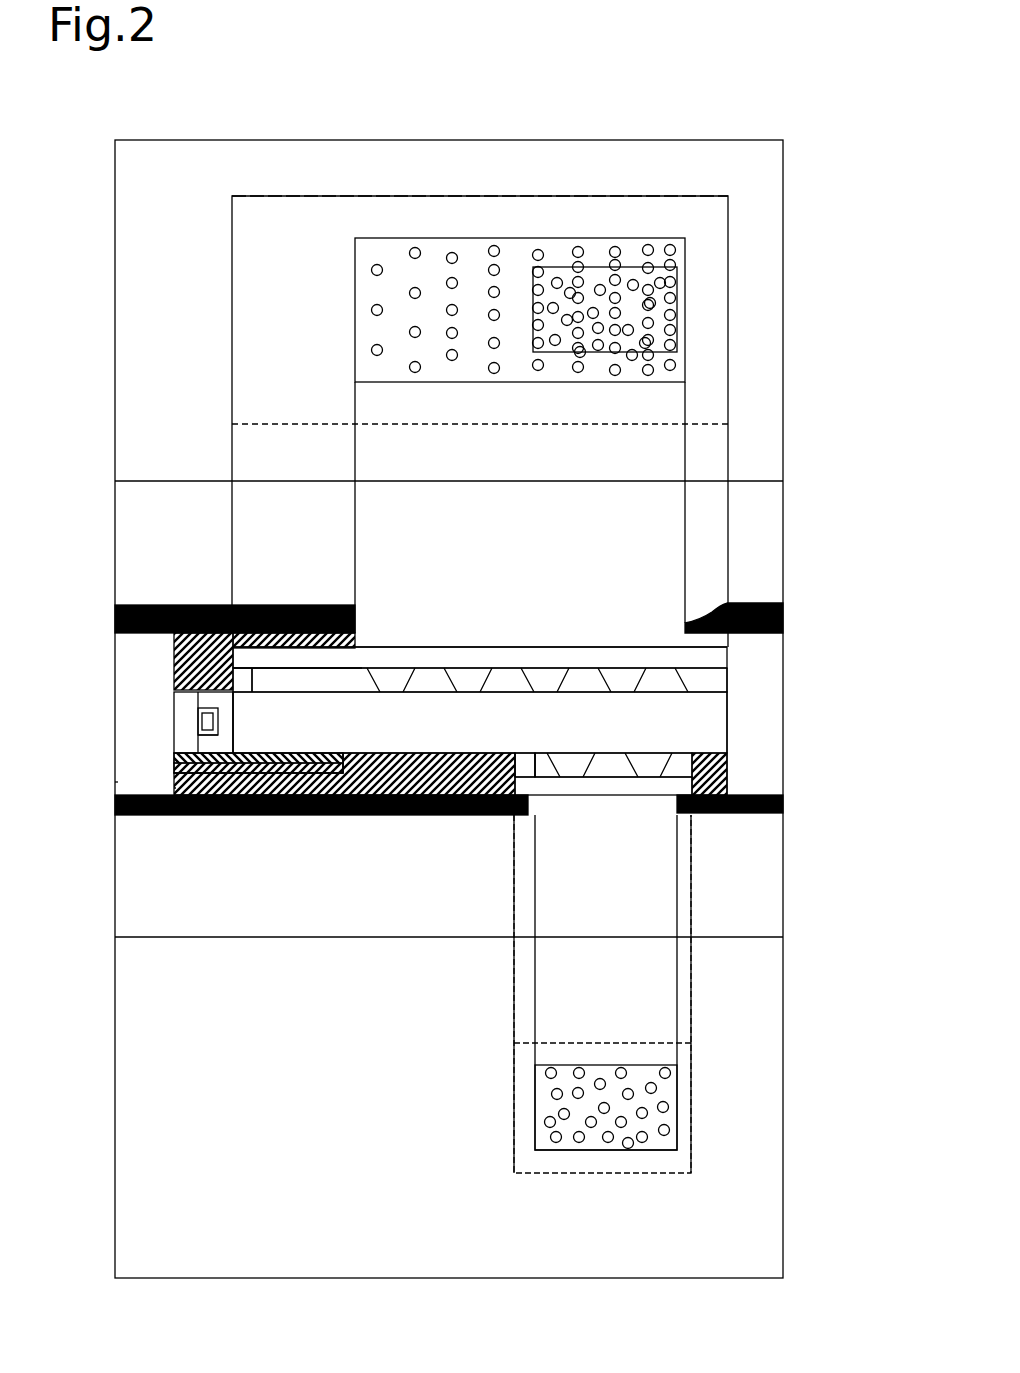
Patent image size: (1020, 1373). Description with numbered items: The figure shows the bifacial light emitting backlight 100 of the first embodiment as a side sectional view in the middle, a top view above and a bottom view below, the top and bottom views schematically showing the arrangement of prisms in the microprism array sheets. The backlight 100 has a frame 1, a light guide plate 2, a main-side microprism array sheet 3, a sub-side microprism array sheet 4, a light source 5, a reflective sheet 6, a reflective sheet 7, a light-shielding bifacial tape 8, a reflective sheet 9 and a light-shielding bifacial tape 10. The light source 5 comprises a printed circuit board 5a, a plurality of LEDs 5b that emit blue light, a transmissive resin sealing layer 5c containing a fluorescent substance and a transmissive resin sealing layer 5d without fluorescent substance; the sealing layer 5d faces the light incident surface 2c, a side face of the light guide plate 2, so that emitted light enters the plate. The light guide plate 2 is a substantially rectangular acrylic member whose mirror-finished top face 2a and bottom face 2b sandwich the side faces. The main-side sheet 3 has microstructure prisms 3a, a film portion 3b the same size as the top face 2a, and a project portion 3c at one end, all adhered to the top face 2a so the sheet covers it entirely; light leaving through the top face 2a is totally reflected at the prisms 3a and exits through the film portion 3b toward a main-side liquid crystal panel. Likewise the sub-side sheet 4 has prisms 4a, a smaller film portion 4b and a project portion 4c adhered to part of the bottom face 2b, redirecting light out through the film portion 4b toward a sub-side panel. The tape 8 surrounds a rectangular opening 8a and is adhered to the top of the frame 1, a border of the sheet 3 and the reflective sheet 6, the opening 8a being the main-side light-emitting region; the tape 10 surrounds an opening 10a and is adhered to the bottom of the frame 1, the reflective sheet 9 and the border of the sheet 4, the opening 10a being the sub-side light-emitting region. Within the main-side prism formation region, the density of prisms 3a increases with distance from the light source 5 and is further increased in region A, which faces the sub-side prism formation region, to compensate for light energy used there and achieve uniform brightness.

The bifacial light emitting backlight 100 is at (215, 587).
The frame 1 is at (116, 782).
The light guide plate 2 is at (713, 720).
The top face 2a is at (362, 668).
The bottom face 2b is at (376, 753).
The light incident surface 2c is at (233, 742).
The main-side microprism array sheet 3 is at (634, 647).
The microstructure prisms 3a is at (494, 250).
The film portion 3b is at (280, 196).
The project portion 3c is at (248, 681).
The sub-side microprism array sheet 4 is at (640, 797).
The microstructure prisms 4a is at (657, 765).
The film portion 4b is at (673, 787).
The project portion 4c is at (523, 767).
The light source 5 is at (173, 702).
The printed circuit board 5a is at (173, 712).
The LEDs 5b is at (200, 727).
The transmissive resin sealing layer 5c is at (207, 738).
The transmissive resin sealing layer 5d is at (207, 748).
The reflective sheet 6 is at (174, 665).
The reflective sheet 7 is at (268, 765).
The light-shielding bifacial tape 8 is at (784, 190).
The opening 8a is at (628, 238).
The reflective sheet 9 is at (173, 788).
The light-shielding bifacial tape 10 is at (413, 815).
The opening 10a is at (675, 808).
The region A is at (597, 267).